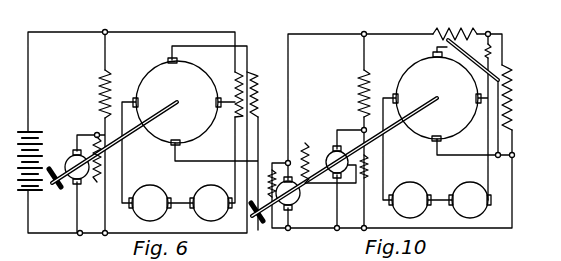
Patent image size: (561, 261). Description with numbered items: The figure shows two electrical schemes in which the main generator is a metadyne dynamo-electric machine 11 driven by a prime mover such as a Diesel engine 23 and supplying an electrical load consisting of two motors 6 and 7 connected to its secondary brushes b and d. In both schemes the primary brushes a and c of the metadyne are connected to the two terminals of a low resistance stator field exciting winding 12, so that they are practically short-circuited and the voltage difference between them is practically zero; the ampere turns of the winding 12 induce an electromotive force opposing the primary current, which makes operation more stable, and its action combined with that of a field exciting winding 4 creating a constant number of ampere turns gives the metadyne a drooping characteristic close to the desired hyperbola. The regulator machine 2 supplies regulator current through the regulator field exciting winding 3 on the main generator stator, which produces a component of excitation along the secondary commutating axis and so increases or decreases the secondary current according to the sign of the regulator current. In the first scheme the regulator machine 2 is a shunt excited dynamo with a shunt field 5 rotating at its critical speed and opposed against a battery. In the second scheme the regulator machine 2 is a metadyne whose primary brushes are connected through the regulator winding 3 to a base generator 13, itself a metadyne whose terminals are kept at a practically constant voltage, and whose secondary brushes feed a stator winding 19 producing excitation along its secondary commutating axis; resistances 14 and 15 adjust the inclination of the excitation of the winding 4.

In FIG. 6, the regulator machine 2 is at (114, 143).
In FIG. 10, the regulator machine 2 is at (338, 158).
In FIG. 6, the regulator field exciting winding 3 is at (102, 94).
In FIG. 10, the regulator field exciting winding 3 is at (361, 93).
In FIG. 6, the field exciting winding 4 is at (233, 94).
In FIG. 10, the field exciting winding 4 is at (513, 97).
In FIG. 6, the shunt field 5 is at (103, 159).
In FIG. 10, the shunt field 5 is at (368, 165).
In FIG. 6, the motor 6 is at (149, 197).
In FIG. 10, the motor 6 is at (410, 196).
In FIG. 6, the motor 7 is at (211, 196).
In FIG. 10, the motor 7 is at (470, 193).
In FIG. 6, the metadyne dynamo-electric machine 11 is at (178, 101).
In FIG. 10, the metadyne dynamo-electric machine 11 is at (434, 96).
In FIG. 6, the stator field exciting winding 12 is at (262, 94).
In FIG. 10, the stator field exciting winding 12 is at (477, 49).
In FIG. 10, the base generator 13 is at (344, 157).
In FIG. 10, the resistance 14 is at (455, 26).
In FIG. 10, the resistance 15 is at (494, 48).
In FIG. 10, the stator winding 19 is at (315, 155).
In FIG. 6, the Diesel engine 23 is at (39, 175).
In FIG. 10, the Diesel engine 23 is at (250, 229).